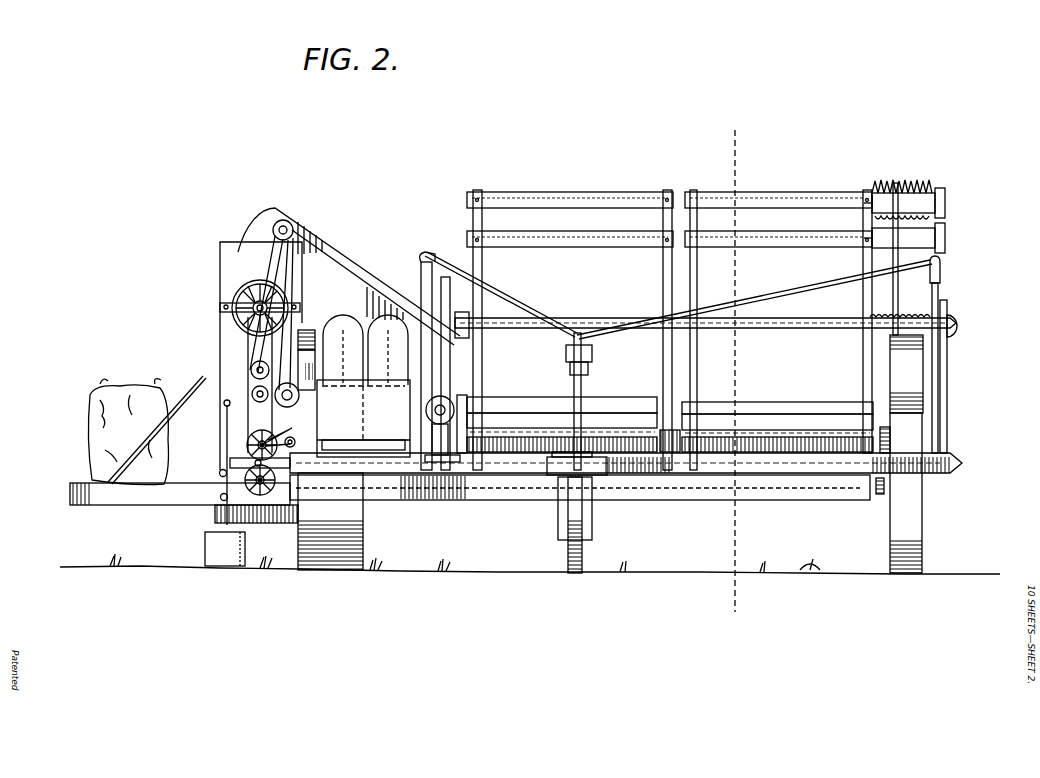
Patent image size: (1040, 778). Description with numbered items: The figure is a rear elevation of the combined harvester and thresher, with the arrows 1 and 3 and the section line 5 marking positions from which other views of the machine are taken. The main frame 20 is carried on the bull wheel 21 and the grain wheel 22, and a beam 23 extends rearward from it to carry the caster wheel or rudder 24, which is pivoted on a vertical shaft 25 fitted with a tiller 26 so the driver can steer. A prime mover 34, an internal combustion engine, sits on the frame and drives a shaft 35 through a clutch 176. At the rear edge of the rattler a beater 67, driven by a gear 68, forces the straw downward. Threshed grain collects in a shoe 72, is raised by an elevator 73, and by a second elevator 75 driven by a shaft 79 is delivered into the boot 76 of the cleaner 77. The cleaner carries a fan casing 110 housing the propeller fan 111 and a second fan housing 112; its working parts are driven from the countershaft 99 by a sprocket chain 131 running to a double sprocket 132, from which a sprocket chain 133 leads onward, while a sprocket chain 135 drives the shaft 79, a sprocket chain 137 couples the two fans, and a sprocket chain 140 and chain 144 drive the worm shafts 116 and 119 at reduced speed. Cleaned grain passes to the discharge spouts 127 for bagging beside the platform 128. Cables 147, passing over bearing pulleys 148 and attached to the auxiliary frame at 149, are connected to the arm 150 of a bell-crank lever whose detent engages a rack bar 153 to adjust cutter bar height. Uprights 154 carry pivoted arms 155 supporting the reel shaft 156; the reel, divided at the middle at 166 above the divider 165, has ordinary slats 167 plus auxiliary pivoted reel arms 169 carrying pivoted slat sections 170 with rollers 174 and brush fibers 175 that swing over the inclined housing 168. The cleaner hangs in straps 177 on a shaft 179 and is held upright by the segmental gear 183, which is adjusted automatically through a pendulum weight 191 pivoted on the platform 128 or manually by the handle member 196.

The direction arrow 1 is at (95, 307).
The direction arrow 3 is at (982, 320).
The section line 5 is at (727, 162).
The main frame 20 is at (924, 458).
The bull wheel 21 is at (320, 566).
The grain wheel 22 is at (897, 576).
The beam 23 is at (556, 470).
The caster wheel or rudder 24 is at (590, 568).
The vertical shaft 25 is at (580, 394).
The tiller 26 is at (592, 352).
The prime mover 34 is at (384, 333).
The drive shaft 35 is at (434, 438).
The beater 67 is at (623, 440).
The gear 68 is at (680, 434).
The shoe 72 is at (440, 492).
The elevator 73 is at (454, 383).
The elevator 75 is at (350, 264).
The boot 76 is at (266, 240).
The cleaner 77 is at (229, 265).
The shaft 79 is at (292, 223).
The countershaft 99 is at (374, 531).
The fan casing 110 is at (240, 320).
The propeller fan 111 is at (236, 293).
The fan housing 112 is at (223, 474).
The shaft 116 is at (248, 364).
The shaft 119 is at (263, 388).
The discharge spouts 127 is at (224, 398).
The platform 128 is at (116, 496).
The sprocket chain 131 is at (383, 430).
The double sprocket 132 is at (282, 432).
The sprocket chain 133 is at (262, 438).
The sprocket chain 135 is at (266, 243).
The sprocket chain 137 is at (160, 430).
The sprocket chain 140 is at (356, 332).
The chain 144 is at (258, 353).
The cables 147 is at (500, 298).
The bearing pulleys 148 is at (940, 265).
The cable connection 149 is at (425, 361).
The bell-crank lever arm 150 is at (554, 401).
The rack bar 153 is at (468, 321).
The uprights 154 is at (453, 351).
The pivoted arms 155 is at (952, 315).
The reel shaft 156 is at (796, 329).
The divider 165 is at (692, 397).
The reel division 166 is at (682, 192).
The reel slats 167 is at (543, 230).
The housing 168 is at (905, 425).
The auxiliary pivoted reel arms 169 is at (897, 292).
The pivoted slat sections 170 is at (934, 205).
The rollers 174 is at (941, 231).
The brush fibers 175 is at (891, 181).
The clutch 176 is at (556, 358).
The straps 177 is at (272, 546).
The shaft 179 is at (324, 430).
The segmental gear 183 is at (367, 480).
The pendulum weight 191 is at (215, 553).
The handle member 196 is at (246, 433).